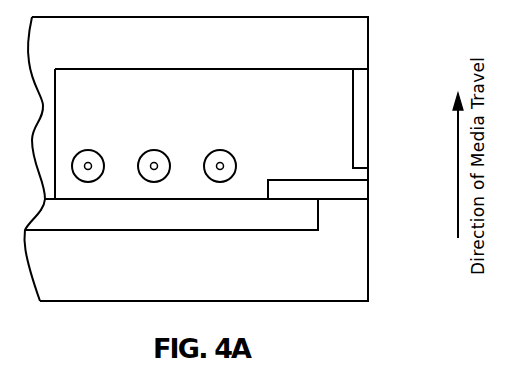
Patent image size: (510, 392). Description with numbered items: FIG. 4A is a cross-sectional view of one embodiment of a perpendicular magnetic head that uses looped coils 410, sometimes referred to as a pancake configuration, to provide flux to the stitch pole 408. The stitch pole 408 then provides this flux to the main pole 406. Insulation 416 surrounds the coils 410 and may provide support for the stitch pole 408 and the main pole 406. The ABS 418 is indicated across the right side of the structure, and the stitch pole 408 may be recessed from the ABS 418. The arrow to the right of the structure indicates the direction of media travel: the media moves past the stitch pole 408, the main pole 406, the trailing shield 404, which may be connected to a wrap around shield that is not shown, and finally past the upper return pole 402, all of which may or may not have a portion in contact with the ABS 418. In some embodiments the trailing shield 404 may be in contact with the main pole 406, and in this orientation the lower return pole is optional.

The upper return pole 402 is at (281, 52).
The trailing shield 404 is at (368, 100).
The main pole 406 is at (369, 186).
The stitch pole 408 is at (229, 226).
The looped coils 410 is at (88, 150).
The insulation 416 is at (319, 138).
The ABS 418 is at (368, 34).